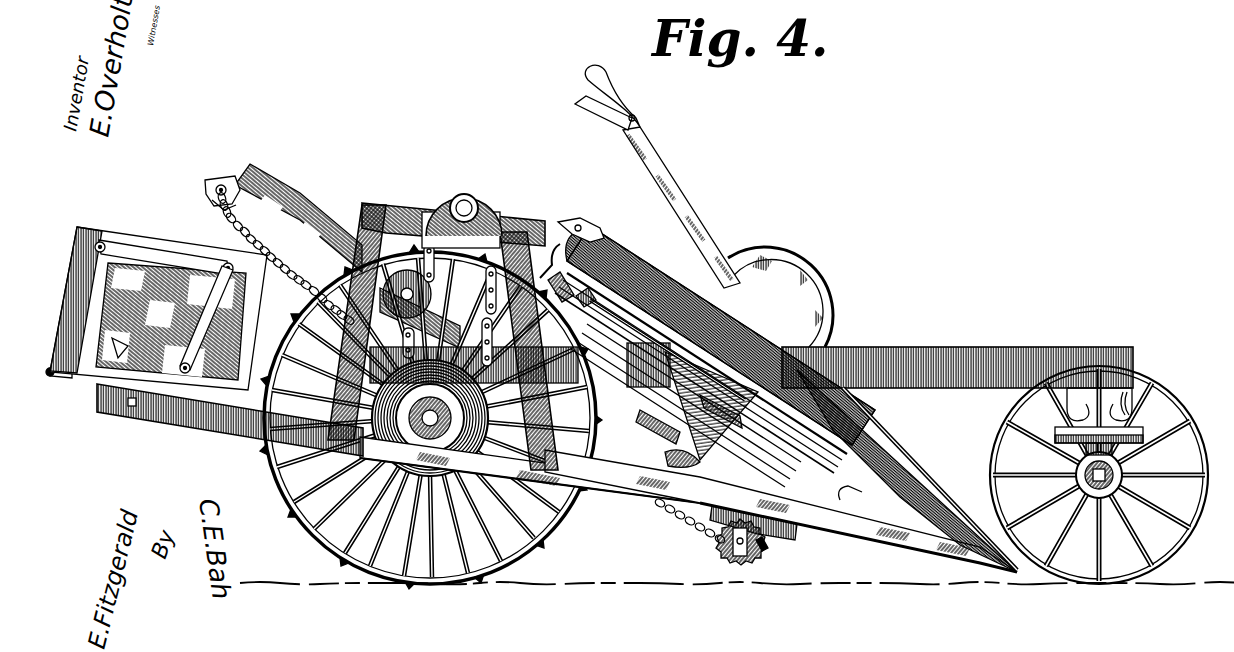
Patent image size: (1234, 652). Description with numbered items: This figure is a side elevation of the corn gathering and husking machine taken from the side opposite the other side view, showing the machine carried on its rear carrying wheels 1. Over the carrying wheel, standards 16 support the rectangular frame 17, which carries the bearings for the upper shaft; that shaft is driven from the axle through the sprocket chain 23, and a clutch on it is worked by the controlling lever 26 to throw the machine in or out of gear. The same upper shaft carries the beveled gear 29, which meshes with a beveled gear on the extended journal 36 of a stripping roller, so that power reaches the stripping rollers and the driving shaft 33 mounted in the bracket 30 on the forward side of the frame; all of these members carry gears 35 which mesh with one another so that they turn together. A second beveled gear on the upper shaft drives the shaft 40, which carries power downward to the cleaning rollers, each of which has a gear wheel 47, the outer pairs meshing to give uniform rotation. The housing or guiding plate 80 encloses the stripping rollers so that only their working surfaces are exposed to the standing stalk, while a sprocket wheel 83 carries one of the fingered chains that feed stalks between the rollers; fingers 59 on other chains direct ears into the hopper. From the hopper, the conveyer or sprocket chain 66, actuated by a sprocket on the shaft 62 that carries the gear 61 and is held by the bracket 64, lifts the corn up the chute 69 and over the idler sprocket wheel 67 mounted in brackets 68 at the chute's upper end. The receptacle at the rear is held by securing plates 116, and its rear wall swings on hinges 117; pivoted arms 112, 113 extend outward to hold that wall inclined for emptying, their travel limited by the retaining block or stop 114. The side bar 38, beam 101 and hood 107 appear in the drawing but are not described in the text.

The rear carrying wheels 1 is at (560, 508).
The standards 16 is at (338, 331).
The rectangular frame 17 is at (396, 212).
The sprocket chain 23 is at (485, 289).
The controlling lever 26 is at (496, 328).
The beveled gear 29 is at (465, 172).
The bracket 30 is at (586, 240).
The driving shaft 33 is at (636, 275).
The gears 35 is at (582, 305).
The extended journal 36 is at (560, 290).
The shaft 40 is at (604, 306).
The side bar 38 is at (781, 511).
The gear wheel 47 is at (768, 540).
The fingers 59 is at (708, 398).
The gear 61 is at (760, 566).
The shaft 62 is at (742, 568).
The bracket 64 is at (718, 558).
The conveyer or sprocket chain 66 is at (292, 280).
The idler sprocket wheel 67 is at (236, 210).
The brackets 68 is at (225, 177).
The chute 69 is at (312, 194).
The housing or guiding plate 80 is at (912, 474).
The sprocket wheel 83 is at (792, 353).
The rear beam 101 is at (1016, 350).
The hood 107 is at (805, 290).
The pivoted arm 112 is at (152, 256).
The pivoted arm 113 is at (206, 320).
The retaining block or stop 114 is at (130, 352).
The securing plates 116 is at (132, 412).
The hinges 117 is at (55, 376).